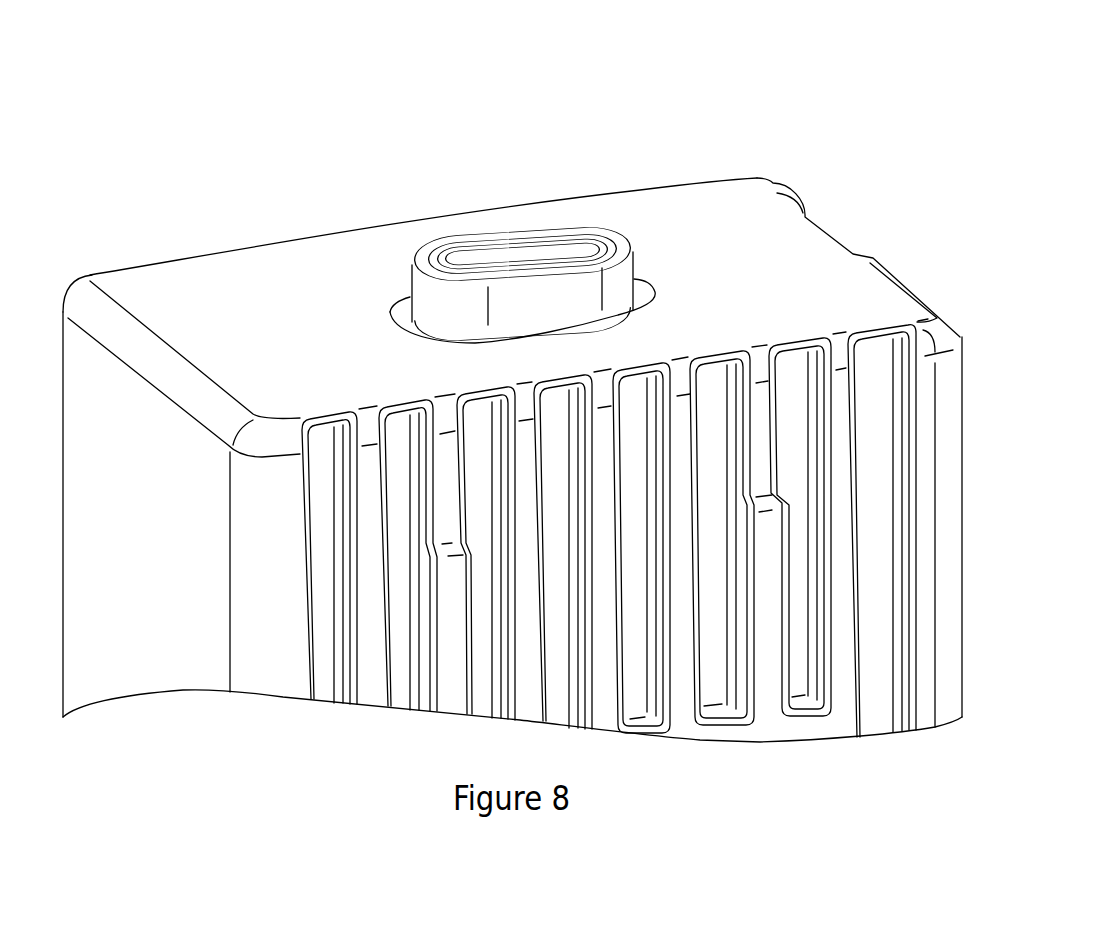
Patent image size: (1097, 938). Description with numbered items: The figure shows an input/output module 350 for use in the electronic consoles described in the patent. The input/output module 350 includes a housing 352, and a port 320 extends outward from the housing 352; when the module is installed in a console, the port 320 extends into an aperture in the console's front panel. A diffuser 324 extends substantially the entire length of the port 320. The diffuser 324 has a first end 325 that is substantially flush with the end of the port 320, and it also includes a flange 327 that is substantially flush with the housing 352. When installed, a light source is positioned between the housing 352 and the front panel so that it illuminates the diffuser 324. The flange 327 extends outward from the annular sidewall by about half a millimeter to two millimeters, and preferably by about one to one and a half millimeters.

The input/output module 350 is at (427, 125).
The housing 352 is at (747, 212).
The port 320 is at (547, 247).
The diffuser 324 is at (612, 248).
The first end 325 is at (420, 258).
The flange 327 is at (393, 320).